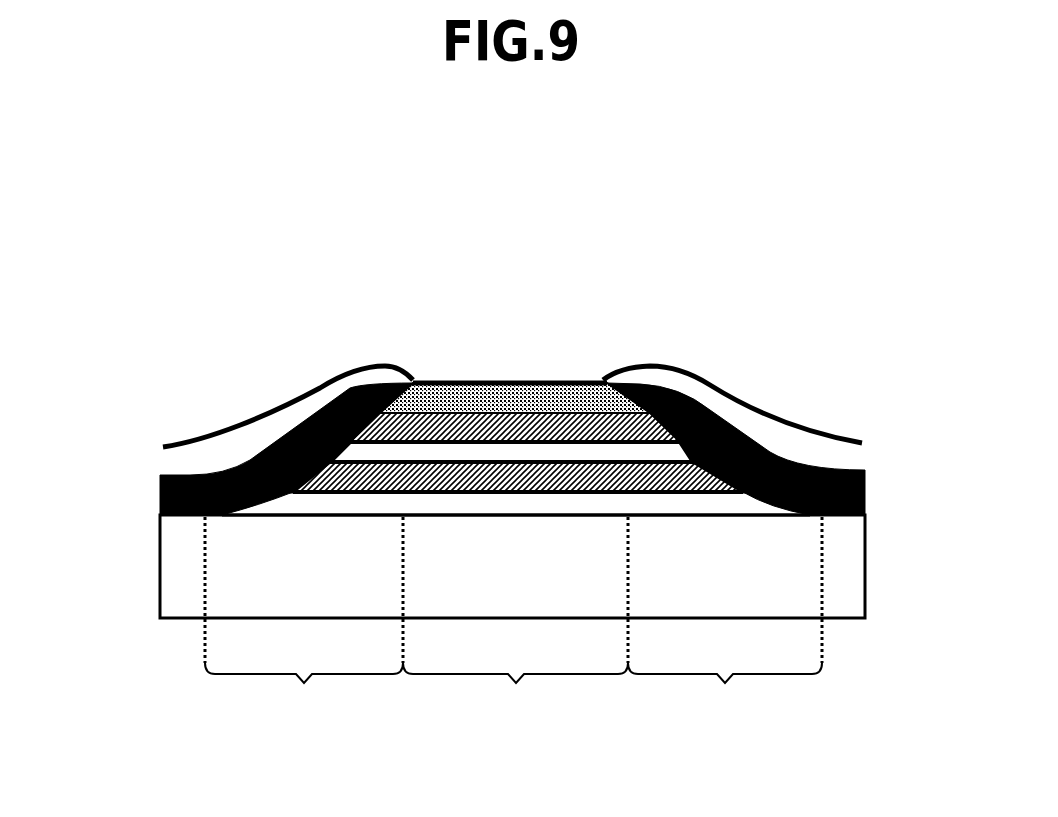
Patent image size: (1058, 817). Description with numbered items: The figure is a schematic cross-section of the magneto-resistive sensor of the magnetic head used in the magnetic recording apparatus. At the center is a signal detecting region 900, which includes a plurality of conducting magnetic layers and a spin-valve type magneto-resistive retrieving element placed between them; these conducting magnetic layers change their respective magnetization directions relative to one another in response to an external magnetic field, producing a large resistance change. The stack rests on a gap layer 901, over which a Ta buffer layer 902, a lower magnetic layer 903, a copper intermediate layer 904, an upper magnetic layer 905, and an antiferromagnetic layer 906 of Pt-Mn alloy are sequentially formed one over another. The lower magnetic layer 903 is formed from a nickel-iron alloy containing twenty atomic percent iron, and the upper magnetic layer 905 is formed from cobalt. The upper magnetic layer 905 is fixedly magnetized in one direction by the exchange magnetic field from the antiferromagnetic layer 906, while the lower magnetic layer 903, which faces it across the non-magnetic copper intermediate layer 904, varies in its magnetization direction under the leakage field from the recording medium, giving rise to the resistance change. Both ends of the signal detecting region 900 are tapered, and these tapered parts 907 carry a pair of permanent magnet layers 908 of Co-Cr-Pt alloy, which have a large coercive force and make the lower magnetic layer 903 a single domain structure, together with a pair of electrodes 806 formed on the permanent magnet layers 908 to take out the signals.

The electrodes 806 is at (297, 407).
The signal detecting region 900 is at (515, 693).
The gap layer 901 is at (843, 563).
The Ta buffer layer 902 is at (565, 500).
The lower magnetic layer 903 is at (562, 460).
The copper intermediate layer 904 is at (522, 453).
The upper magnetic layer 905 is at (488, 420).
The antiferromagnetic layer 906 is at (451, 412).
The tapered parts 907 is at (513, 620).
The permanent magnet layers 908 is at (250, 462).